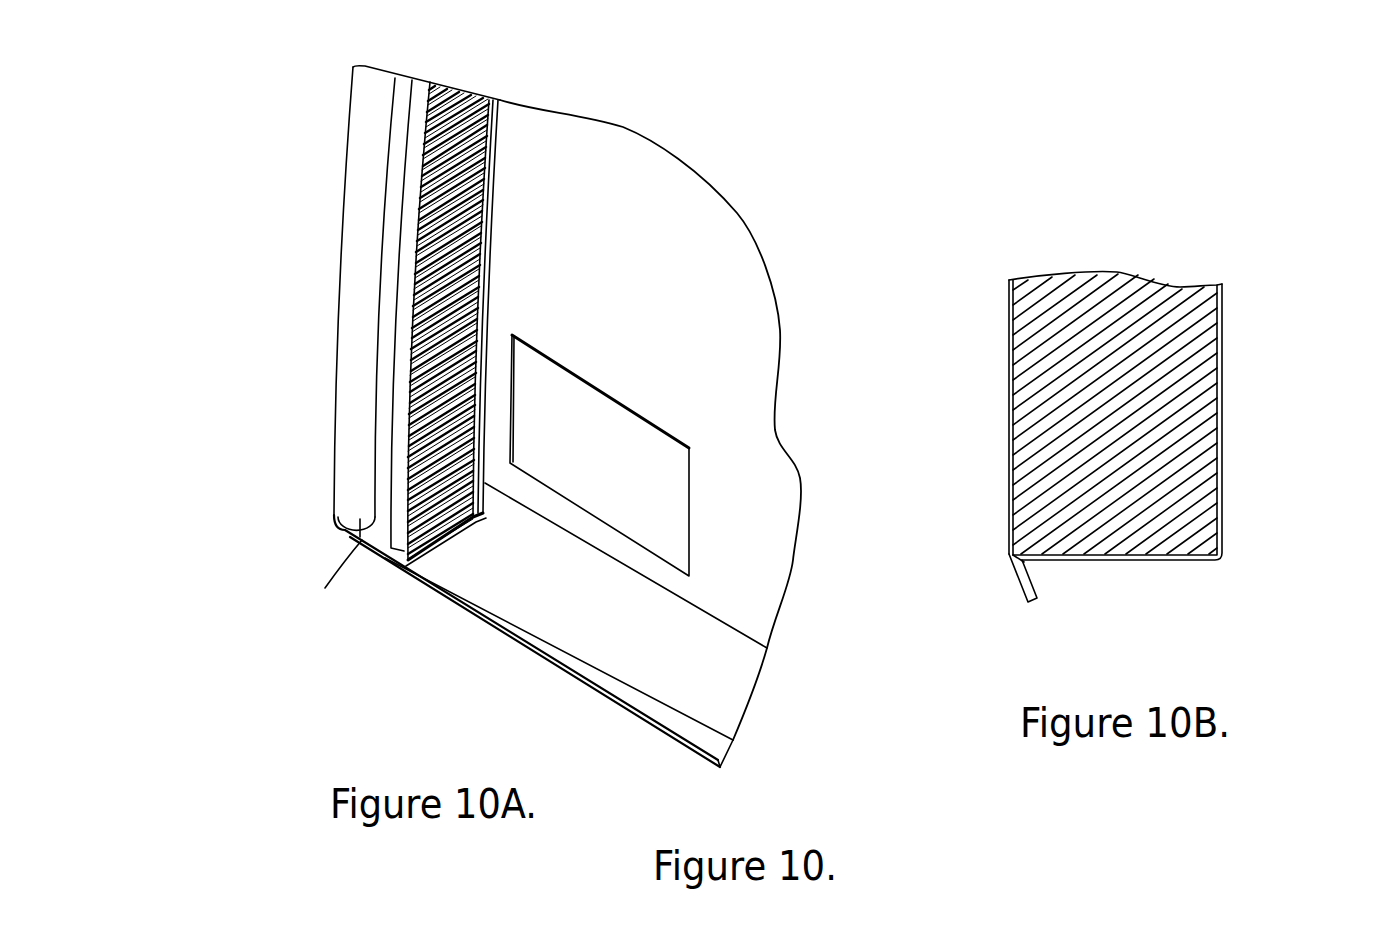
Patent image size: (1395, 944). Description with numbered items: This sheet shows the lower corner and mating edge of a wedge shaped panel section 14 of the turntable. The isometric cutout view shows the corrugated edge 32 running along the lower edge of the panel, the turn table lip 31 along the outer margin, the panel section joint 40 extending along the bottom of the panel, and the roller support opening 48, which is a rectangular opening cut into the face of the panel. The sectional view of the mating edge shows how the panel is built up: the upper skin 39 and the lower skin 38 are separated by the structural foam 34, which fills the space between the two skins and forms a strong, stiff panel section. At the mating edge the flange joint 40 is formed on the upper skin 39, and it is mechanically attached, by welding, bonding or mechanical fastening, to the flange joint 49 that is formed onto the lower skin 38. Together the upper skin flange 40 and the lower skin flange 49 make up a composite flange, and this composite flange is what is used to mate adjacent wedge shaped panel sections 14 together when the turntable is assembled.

In FIG. 10, the wedge shaped panel section 14 is at (730, 152).
In FIG. 10A, the turn table lip 31 is at (328, 467).
In FIG. 10A, the corrugated edge 32 is at (370, 545).
In FIG. 10B, the structural foam 34 is at (1074, 316).
In FIG. 10, the lower skin 38 is at (670, 262).
In FIG. 10B, the lower skin 38 is at (1226, 413).
In FIG. 10A, the upper skin 39 is at (457, 611).
In FIG. 10B, the upper skin 39 is at (1006, 388).
In FIG. 10A, the flange joint 40 is at (665, 738).
In FIG. 10B, the flange joint 40 is at (1016, 585).
In FIG. 10, the roller support opening 48 is at (667, 421).
In FIG. 10B, the flange joint 49 is at (1044, 584).